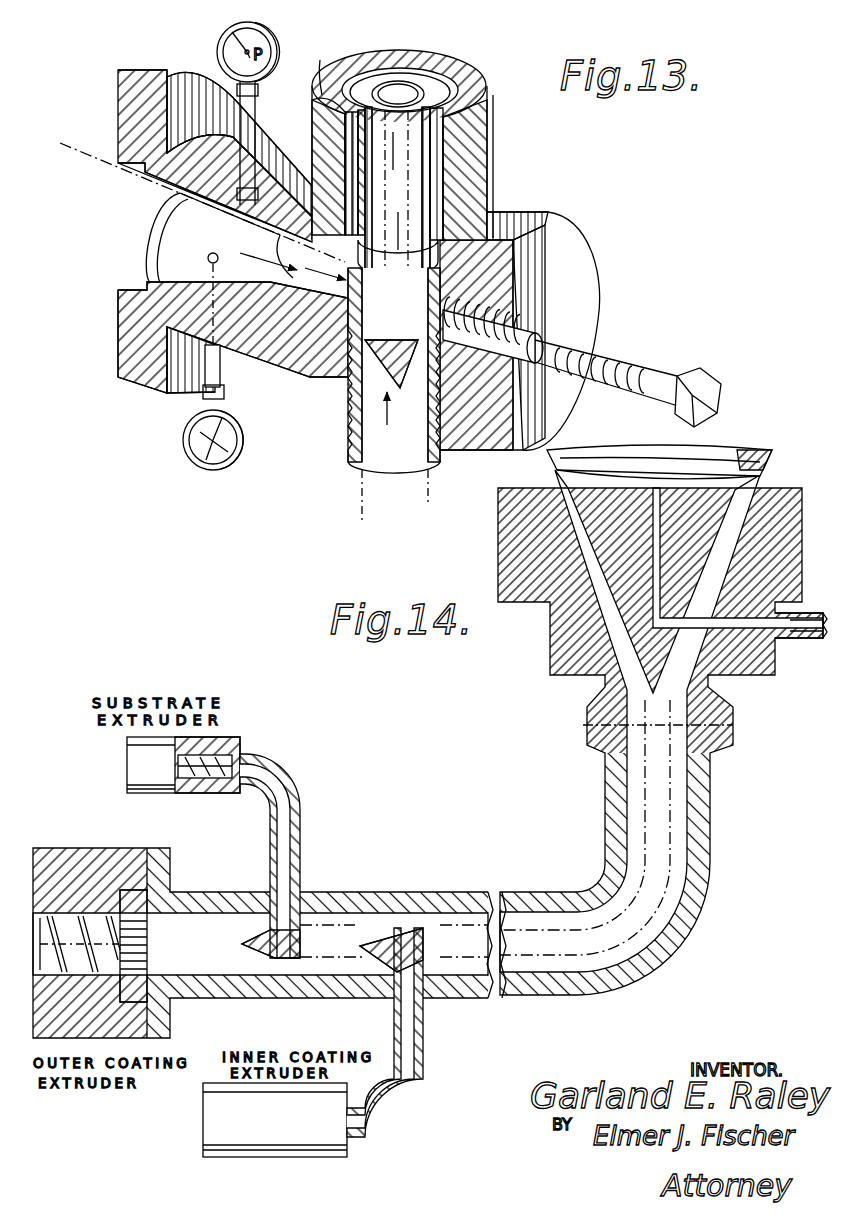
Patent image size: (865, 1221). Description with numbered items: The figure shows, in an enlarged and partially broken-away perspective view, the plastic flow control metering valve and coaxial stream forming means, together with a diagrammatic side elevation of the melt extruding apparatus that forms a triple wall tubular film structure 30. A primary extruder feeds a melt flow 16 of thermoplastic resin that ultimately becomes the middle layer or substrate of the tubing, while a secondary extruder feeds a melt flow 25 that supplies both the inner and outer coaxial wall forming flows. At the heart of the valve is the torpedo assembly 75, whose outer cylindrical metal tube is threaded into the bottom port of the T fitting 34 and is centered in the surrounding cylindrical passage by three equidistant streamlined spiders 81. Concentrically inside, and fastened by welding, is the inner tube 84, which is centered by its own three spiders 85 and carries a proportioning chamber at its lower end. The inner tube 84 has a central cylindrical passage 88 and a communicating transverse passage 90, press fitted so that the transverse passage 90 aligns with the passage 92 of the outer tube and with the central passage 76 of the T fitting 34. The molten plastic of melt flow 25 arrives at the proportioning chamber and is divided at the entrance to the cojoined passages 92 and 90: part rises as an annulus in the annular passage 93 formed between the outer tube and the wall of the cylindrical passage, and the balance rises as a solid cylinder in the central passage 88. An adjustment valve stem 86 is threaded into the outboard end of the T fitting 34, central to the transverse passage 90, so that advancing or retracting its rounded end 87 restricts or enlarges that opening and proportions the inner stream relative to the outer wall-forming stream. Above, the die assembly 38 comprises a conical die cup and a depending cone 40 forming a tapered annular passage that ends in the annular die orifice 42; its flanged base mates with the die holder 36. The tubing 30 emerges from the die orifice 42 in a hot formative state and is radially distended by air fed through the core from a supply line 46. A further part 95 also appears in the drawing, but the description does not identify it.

In FIG. 13, the melt flow 16 is at (405, 478).
In FIG. 13, the melt flow 25 is at (113, 228).
In FIG. 13, the triple wall tubular film structure 30 is at (367, 72).
In FIG. 13, the T fitting 34 is at (518, 232).
In FIG. 13, the die holder 36 is at (488, 162).
In FIG. 14, the die assembly 38 is at (503, 548).
In FIG. 14, the depending cone 40 is at (627, 612).
In FIG. 14, the annular die orifice 42 is at (760, 478).
In FIG. 14, the supply line 46 is at (790, 640).
In FIG. 13, the torpedo assembly 75 is at (418, 162).
In FIG. 13, the central passage 76 is at (310, 290).
In FIG. 13, the streamlined spiders 81 is at (448, 82).
In FIG. 13, the inner tube 84 is at (415, 80).
In FIG. 13, the streamlined spiders 85 is at (368, 105).
In FIG. 13, the adjustment valve stem 86 is at (688, 372).
In FIG. 13, the rounded end 87 is at (540, 343).
In FIG. 13, the central cylindrical passage 88 is at (391, 80).
In FIG. 13, the transverse passage 90 is at (333, 375).
In FIG. 13, the passage 92 is at (360, 335).
In FIG. 13, the annular passage 93 is at (312, 100).
In FIG. 13, the bore 95 is at (428, 96).